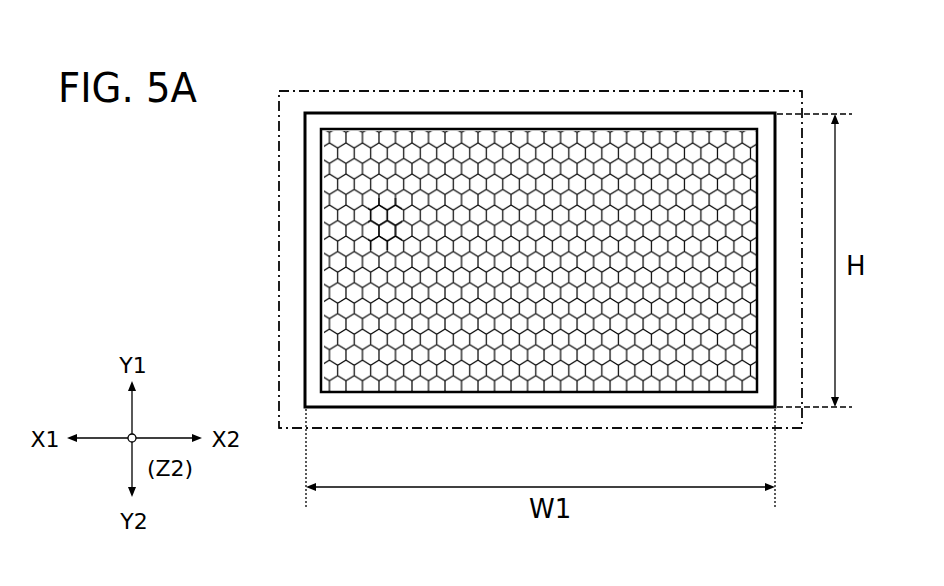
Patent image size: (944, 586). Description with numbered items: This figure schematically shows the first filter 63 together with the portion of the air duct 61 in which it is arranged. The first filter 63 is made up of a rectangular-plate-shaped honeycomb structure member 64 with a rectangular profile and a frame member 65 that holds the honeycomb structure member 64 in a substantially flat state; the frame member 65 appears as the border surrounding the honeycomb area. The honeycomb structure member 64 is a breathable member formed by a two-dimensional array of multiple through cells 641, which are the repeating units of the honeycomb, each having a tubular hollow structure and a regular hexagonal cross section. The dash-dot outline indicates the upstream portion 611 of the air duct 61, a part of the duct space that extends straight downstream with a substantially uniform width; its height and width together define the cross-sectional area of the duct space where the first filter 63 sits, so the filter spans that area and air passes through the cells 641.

The air duct 61 is at (623, 86).
The upstream portion 611 is at (540, 259).
The first filter 63 is at (394, 108).
The honeycomb structure member 64 is at (440, 363).
The cells 641 is at (390, 228).
The frame member 65 is at (718, 118).